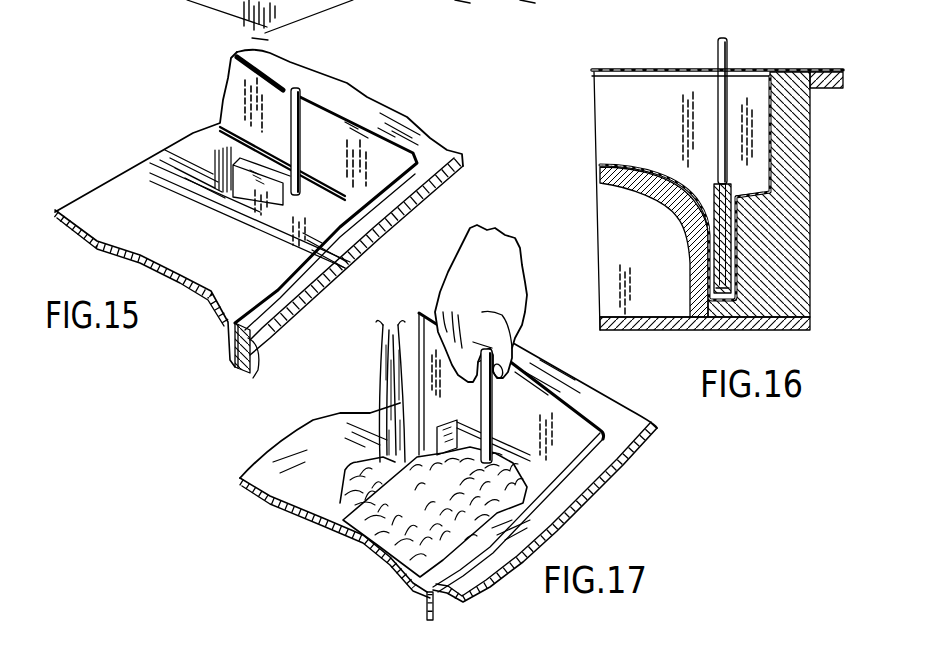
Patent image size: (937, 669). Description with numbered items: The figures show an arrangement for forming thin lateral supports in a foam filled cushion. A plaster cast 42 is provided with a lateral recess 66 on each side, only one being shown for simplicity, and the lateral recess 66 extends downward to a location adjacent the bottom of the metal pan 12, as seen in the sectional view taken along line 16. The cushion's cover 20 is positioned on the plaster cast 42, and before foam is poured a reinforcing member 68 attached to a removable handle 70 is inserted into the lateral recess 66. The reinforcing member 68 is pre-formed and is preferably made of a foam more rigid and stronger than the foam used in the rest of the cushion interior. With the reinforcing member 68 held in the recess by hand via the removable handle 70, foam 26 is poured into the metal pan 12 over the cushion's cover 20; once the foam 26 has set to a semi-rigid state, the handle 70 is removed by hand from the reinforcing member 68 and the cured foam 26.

In FIG. 15, the metal pan 12 is at (255, 378).
In FIG. 16, the metal pan 12 is at (812, 138).
In FIG. 15, the section line 16- 16 is at (362, 75).
In FIG. 15, the cushion's cover 20 is at (259, 208).
In FIG. 16, the cushion's cover 20 is at (652, 175).
In FIG. 17, the cushion's cover 20 is at (600, 474).
In FIG. 17, the foam 26 is at (383, 520).
In FIG. 16, the plaster cast 42 is at (690, 245).
In FIG. 15, the lateral recess 66 is at (230, 192).
In FIG. 16, the lateral recess 66 is at (722, 294).
In FIG. 15, the reinforcing member 68 is at (343, 213).
In FIG. 16, the reinforcing member 68 is at (720, 245).
In FIG. 17, the reinforcing member 68 is at (443, 430).
In FIG. 15, the removable handle 70 is at (296, 88).
In FIG. 16, the removable handle 70 is at (725, 48).
In FIG. 17, the removable handle 70 is at (494, 411).